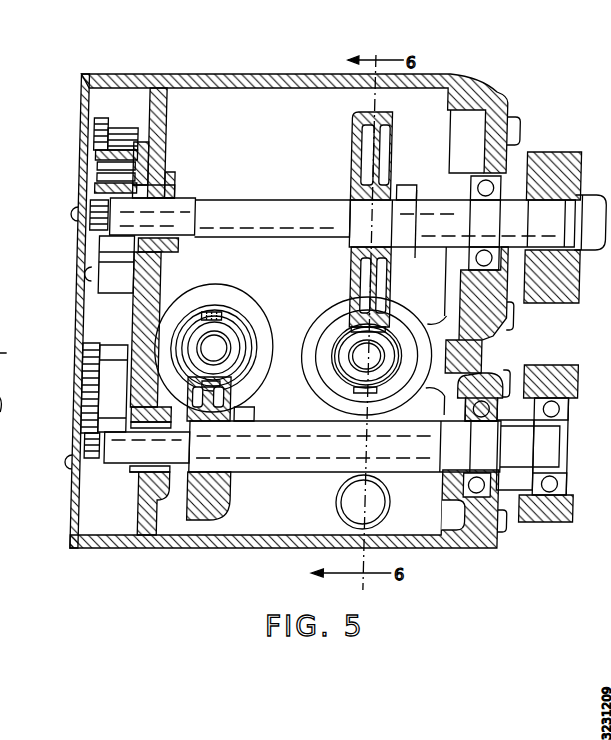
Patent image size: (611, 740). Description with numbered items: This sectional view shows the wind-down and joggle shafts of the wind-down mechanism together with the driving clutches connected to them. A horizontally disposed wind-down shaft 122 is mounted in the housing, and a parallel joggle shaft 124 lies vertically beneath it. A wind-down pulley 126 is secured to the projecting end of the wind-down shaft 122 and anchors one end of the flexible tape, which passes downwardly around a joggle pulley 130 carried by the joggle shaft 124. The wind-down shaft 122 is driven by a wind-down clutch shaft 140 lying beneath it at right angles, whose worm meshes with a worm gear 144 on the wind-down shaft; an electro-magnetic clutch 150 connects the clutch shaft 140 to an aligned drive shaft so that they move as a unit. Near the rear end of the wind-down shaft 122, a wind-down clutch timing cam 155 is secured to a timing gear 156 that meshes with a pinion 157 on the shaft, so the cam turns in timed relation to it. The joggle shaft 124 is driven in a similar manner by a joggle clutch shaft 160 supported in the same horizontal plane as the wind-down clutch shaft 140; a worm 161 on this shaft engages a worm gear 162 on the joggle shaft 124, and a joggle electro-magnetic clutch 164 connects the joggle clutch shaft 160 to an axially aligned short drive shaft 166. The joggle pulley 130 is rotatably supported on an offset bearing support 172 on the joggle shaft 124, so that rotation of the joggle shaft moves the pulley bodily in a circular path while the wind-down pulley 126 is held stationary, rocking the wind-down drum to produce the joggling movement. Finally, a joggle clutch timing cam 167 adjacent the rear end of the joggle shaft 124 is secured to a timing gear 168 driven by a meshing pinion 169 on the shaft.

The wind-down shaft 122 is at (246, 203).
The joggle shaft 124 is at (318, 473).
The wind-down pulley 126 is at (548, 152).
The joggle pulley 130 is at (553, 520).
The wind-down clutch shaft 140 is at (358, 356).
The worm gear 144 is at (349, 116).
The electro-magnetic clutch 150 is at (412, 312).
The wind-down clutch timing cam 155 is at (119, 130).
The timing gear 156 is at (94, 118).
The pinion 157 is at (86, 202).
The joggle clutch shaft 160 is at (222, 346).
The worm 161 is at (195, 342).
The worm gear 162 is at (219, 520).
The joggle electro-magnetic clutch 164 is at (217, 310).
The short drive shaft 166 is at (20, 354).
The joggle clutch timing cam 167 is at (118, 347).
The timing gear 168 is at (98, 342).
The pinion 169 is at (99, 460).
The offset bearing support 172 is at (529, 440).